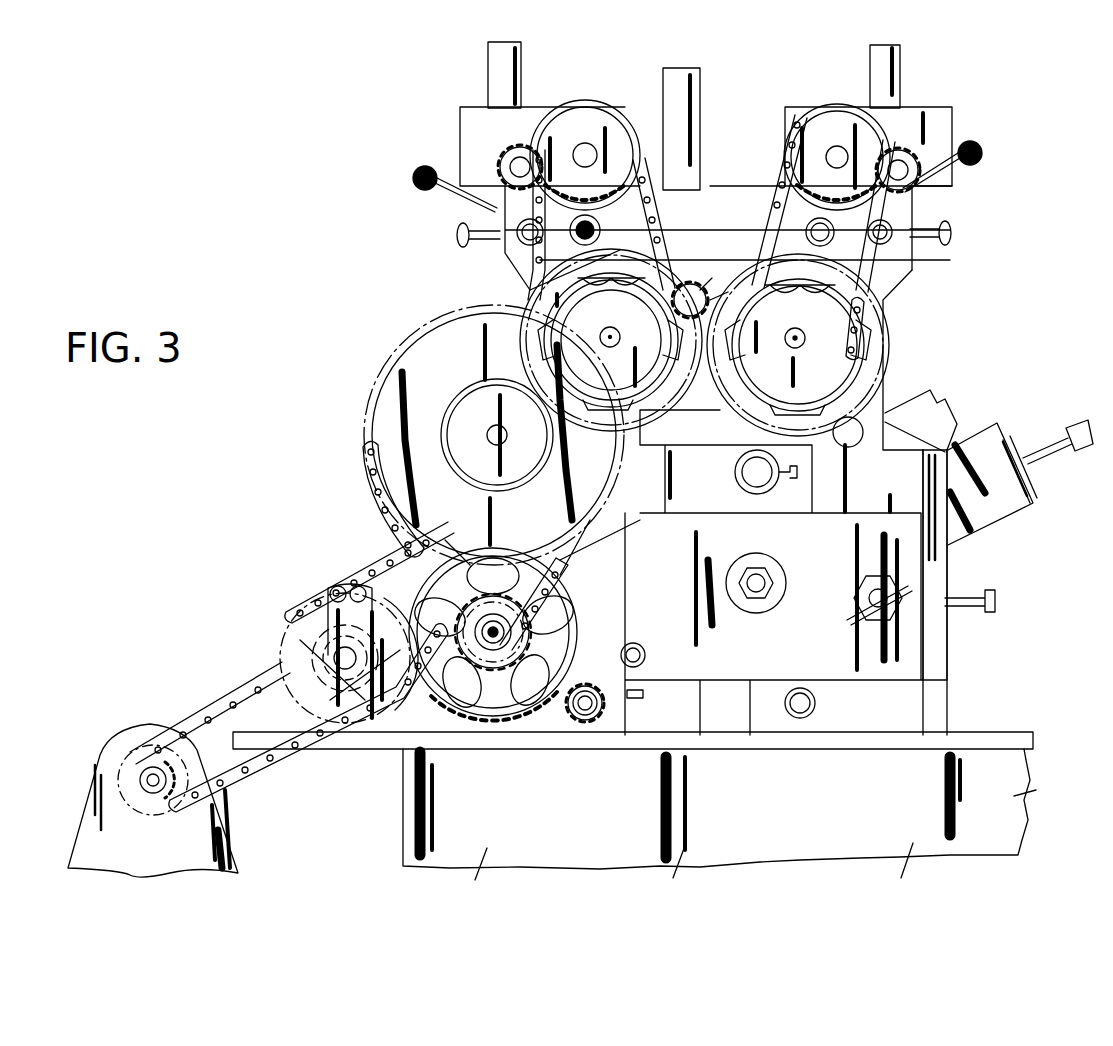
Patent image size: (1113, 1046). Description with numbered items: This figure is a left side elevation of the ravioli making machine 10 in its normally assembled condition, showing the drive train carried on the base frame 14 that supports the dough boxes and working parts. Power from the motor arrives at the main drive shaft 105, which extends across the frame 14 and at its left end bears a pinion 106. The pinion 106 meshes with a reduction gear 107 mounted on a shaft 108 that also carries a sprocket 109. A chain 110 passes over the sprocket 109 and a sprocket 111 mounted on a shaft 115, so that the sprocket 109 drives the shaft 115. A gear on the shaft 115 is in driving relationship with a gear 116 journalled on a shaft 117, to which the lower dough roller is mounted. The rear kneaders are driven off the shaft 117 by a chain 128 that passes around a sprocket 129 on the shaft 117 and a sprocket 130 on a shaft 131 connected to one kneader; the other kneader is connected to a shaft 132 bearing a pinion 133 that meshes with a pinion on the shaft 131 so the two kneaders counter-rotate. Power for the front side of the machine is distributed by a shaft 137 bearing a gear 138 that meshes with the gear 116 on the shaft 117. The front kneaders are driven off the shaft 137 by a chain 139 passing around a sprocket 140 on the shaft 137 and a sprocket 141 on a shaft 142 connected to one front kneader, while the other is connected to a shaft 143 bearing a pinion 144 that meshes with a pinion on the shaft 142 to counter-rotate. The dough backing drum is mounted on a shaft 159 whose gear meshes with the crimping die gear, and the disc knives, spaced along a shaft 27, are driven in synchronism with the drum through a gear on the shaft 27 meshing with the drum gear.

The ravioli making machine 10 is at (380, 325).
The base frame 14 is at (886, 497).
The shaft 27 is at (905, 603).
The main drive shaft 105 is at (583, 712).
The pinion 106 is at (600, 692).
The reduction gear 107 is at (490, 722).
The shaft 108 is at (498, 633).
The sprocket 109 is at (500, 612).
The chain 110 is at (378, 486).
The sprocket 111 is at (398, 428).
The shaft 115 is at (503, 433).
The gear 116 is at (680, 290).
The shaft 117 is at (620, 337).
The chain 128 is at (655, 215).
The sprocket 129 is at (620, 307).
The sprocket 130 is at (603, 191).
The shaft 131 is at (585, 152).
The shaft 132 is at (518, 160).
The pinion 133 is at (505, 168).
The shaft 137 is at (795, 343).
The gear 138 is at (707, 290).
The chain 139 is at (862, 316).
The sprocket 140 is at (795, 328).
The sprocket 141 is at (848, 196).
The shaft 142 is at (837, 150).
The shaft 143 is at (903, 165).
The pinion 144 is at (910, 178).
The shaft 159 is at (760, 583).